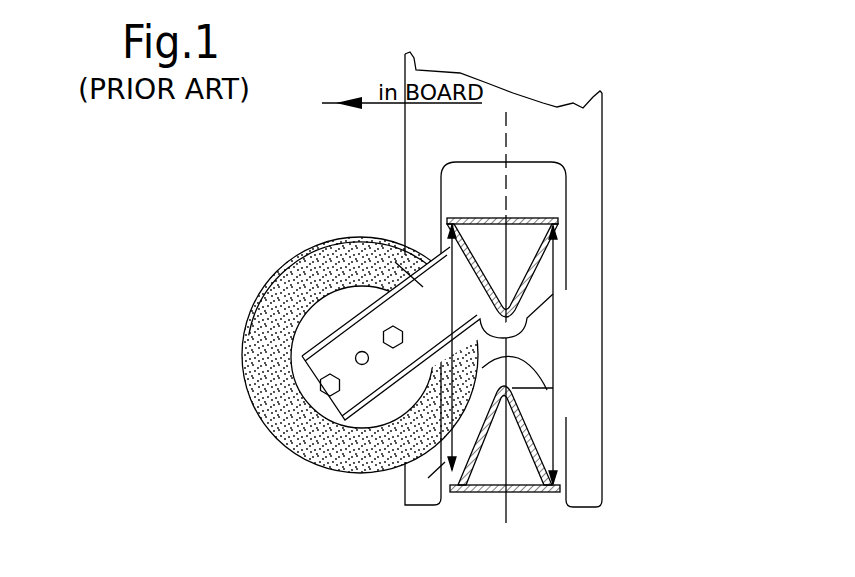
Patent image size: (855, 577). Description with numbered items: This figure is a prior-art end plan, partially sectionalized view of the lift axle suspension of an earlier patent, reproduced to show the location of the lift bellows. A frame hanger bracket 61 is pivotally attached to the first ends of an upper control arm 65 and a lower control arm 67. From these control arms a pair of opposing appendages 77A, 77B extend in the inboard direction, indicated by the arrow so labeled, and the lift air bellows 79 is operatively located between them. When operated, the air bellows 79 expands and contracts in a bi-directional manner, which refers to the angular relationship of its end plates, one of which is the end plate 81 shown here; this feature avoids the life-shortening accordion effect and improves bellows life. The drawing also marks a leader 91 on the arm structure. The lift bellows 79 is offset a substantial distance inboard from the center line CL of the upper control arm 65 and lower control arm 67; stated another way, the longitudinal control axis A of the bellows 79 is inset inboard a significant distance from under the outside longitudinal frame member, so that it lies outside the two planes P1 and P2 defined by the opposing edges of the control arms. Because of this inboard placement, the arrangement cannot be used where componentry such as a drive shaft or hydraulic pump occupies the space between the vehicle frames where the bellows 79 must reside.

The frame hanger bracket 61 is at (458, 145).
The upper control arm 65 is at (557, 238).
The lower control arm 67 is at (530, 493).
The appendage 77A is at (443, 463).
The appendage 77B is at (367, 307).
The lift air bellows 79 is at (290, 437).
The end plate 81 is at (300, 310).
The arm edge 91 is at (423, 287).
The longitudinal control axis A is at (356, 360).
The plane P1 is at (558, 355).
The plane P2 is at (447, 347).
The center line CL is at (508, 140).